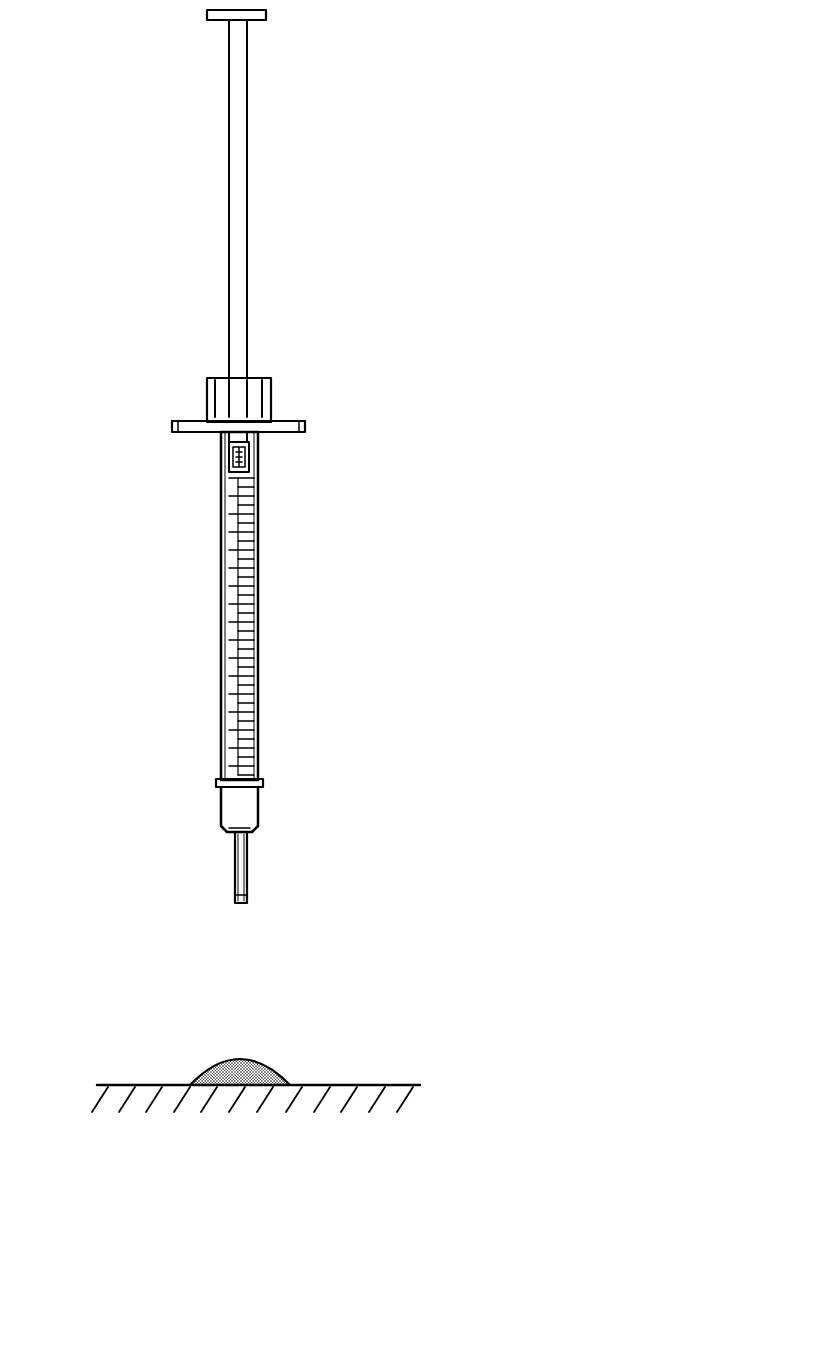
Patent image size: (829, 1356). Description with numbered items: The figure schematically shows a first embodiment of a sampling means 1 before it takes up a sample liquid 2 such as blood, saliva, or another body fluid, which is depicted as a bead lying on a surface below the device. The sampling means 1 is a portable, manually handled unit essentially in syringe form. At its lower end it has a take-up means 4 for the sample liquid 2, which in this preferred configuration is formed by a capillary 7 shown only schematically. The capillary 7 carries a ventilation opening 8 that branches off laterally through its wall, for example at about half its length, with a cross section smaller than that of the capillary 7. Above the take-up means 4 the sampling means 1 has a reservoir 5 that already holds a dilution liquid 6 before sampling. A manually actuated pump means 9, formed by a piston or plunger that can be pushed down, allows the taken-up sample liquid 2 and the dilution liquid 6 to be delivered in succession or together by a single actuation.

The sampling means 1 is at (309, 228).
The sample liquid 2 is at (255, 1063).
The take-up means 4 is at (208, 863).
The reservoir 5 is at (234, 554).
The dilution liquid 6 is at (258, 645).
The capillary 7 is at (247, 890).
The ventilation opening 8 is at (247, 865).
The pump means 9 is at (233, 330).